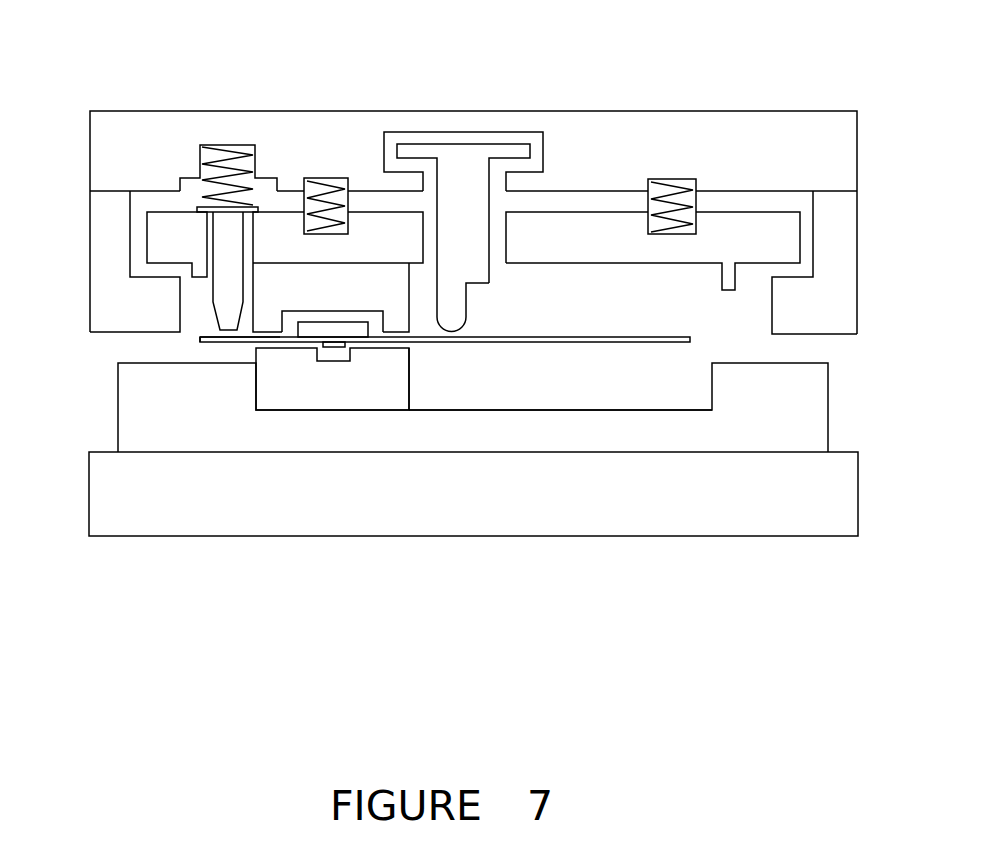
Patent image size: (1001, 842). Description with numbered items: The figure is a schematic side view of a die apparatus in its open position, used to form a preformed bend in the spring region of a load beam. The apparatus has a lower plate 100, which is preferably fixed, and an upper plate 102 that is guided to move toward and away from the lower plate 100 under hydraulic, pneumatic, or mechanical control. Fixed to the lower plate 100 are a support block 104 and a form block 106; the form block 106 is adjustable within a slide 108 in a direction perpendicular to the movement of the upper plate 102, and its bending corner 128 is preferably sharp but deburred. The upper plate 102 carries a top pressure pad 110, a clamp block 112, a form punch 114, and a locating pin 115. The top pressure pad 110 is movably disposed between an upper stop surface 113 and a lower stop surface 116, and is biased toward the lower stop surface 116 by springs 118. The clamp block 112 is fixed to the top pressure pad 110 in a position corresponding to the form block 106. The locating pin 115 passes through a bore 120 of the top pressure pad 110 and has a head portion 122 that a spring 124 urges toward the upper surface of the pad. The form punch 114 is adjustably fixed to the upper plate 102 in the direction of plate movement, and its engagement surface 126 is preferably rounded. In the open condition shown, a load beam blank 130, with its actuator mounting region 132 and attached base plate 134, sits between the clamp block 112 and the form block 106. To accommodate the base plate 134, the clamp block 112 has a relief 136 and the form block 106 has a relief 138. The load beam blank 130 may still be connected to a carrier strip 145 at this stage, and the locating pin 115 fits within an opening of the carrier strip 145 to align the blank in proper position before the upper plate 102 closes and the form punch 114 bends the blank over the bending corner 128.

The lower plate 100 is at (752, 498).
The upper plate 102 is at (745, 152).
The support block 104 is at (805, 412).
The form block 106 is at (377, 390).
The slide 108 is at (578, 410).
The top pressure pad 110 is at (580, 233).
The clamp block 112 is at (272, 302).
The upper stop surface 113 is at (140, 192).
The form punch 114 is at (463, 180).
The locating pin 115 is at (230, 238).
The lower stop surface 116 is at (150, 275).
The springs 118 is at (328, 190).
The bore 120 is at (205, 208).
The head portion 122 is at (213, 240).
The spring 124 is at (232, 155).
The engagement surface 126 is at (467, 317).
The bending corner 128 is at (409, 360).
The load beam blank 130 is at (470, 340).
The actuator mounting region 132 is at (280, 340).
The base plate 134 is at (313, 328).
The relief 136 is at (383, 312).
The relief 138 is at (347, 355).
The carrier strip 145 is at (202, 339).